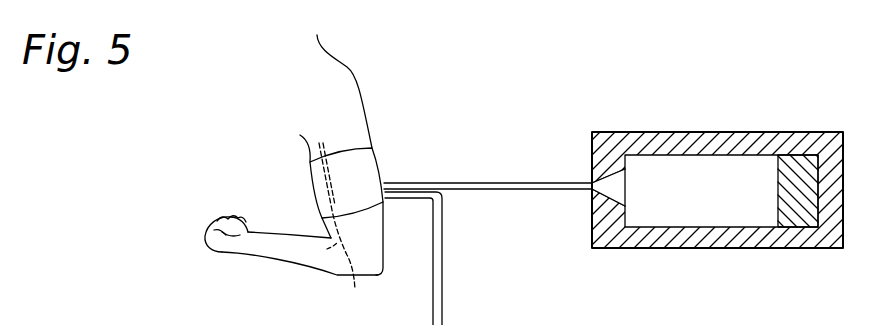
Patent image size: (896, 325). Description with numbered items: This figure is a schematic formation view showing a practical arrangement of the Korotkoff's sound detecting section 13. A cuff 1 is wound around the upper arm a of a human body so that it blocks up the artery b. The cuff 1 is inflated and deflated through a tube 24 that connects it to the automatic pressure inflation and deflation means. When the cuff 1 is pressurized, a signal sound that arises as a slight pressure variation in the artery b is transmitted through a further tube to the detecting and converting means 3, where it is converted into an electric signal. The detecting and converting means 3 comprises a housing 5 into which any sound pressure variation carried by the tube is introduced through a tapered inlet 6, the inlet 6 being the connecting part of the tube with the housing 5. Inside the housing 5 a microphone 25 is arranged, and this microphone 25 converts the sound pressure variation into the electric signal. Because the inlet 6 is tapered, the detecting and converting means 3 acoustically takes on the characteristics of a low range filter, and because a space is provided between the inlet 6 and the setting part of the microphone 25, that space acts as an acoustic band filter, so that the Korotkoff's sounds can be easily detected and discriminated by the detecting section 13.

The upper arm a is at (351, 99).
The cuff 1 is at (372, 167).
The artery b is at (340, 228).
The Korotkoff's sound detecting section 13 is at (512, 147).
The tube 24 is at (442, 268).
The microphone 25 is at (795, 165).
The tapered inlet 6 is at (620, 204).
The housing 5 is at (727, 237).
The detecting and converting means 3 is at (818, 250).